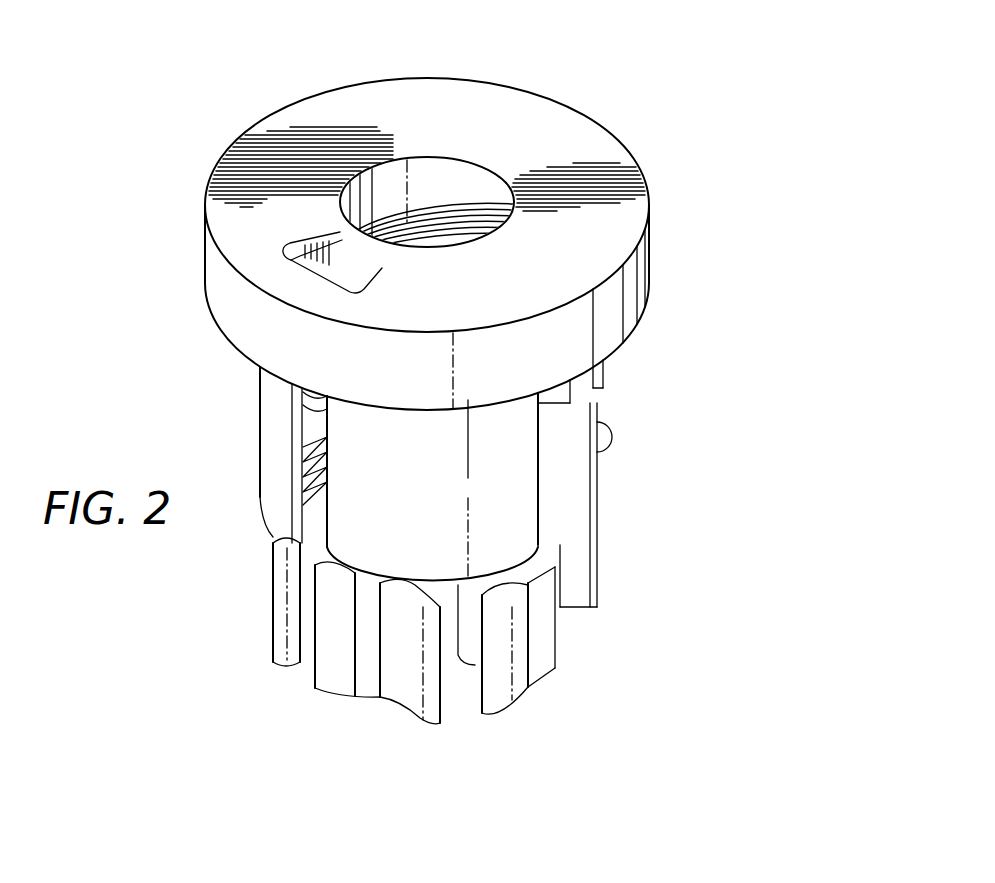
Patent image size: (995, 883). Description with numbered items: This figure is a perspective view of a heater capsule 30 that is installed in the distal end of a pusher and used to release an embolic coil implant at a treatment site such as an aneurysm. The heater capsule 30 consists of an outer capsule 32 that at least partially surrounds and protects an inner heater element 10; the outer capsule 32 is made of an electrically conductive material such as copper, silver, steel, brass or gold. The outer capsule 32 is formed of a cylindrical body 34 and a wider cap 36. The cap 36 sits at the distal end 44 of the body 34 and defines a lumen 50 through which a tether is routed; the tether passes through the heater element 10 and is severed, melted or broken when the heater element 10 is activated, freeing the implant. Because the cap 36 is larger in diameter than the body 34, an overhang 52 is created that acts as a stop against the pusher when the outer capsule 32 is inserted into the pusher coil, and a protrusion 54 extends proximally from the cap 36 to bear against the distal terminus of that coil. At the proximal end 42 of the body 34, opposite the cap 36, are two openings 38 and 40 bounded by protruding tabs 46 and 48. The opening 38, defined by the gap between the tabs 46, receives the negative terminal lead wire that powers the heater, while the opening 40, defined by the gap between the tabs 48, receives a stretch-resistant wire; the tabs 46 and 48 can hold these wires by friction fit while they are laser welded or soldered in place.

The heater element 10 is at (470, 232).
The heater capsule 30 is at (240, 95).
The outer capsule 32 is at (660, 262).
The body 34 is at (560, 455).
The cap 36 is at (615, 220).
The opening 38 is at (472, 725).
The opening 40 is at (300, 688).
The proximal end 42 is at (270, 614).
The distal end 44 is at (222, 334).
The protruding tabs 46 is at (414, 712).
The protruding tabs 48 is at (283, 667).
The lumen 50 is at (453, 180).
The overhang 52 is at (204, 243).
The protrusion 54 is at (594, 372).